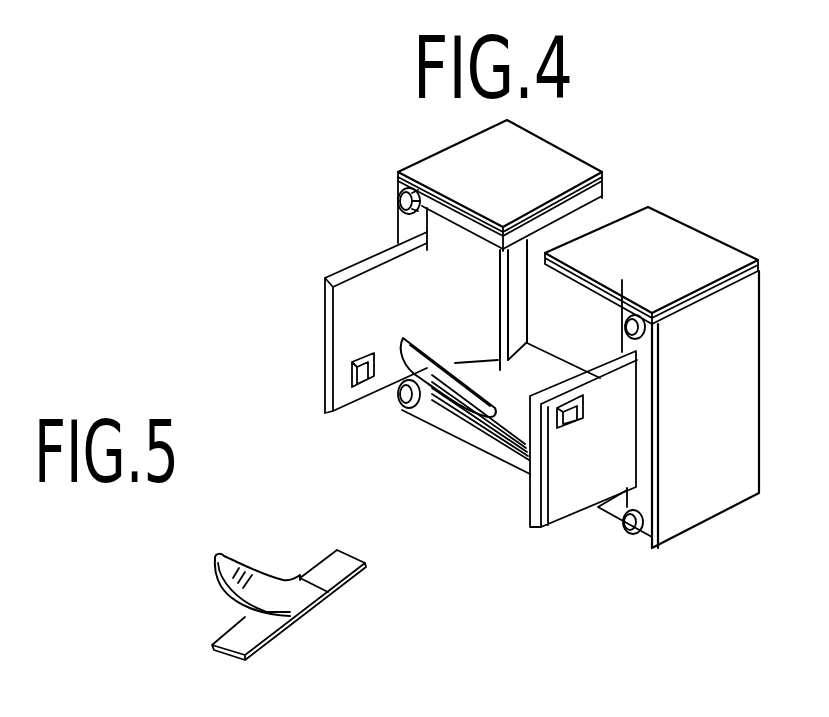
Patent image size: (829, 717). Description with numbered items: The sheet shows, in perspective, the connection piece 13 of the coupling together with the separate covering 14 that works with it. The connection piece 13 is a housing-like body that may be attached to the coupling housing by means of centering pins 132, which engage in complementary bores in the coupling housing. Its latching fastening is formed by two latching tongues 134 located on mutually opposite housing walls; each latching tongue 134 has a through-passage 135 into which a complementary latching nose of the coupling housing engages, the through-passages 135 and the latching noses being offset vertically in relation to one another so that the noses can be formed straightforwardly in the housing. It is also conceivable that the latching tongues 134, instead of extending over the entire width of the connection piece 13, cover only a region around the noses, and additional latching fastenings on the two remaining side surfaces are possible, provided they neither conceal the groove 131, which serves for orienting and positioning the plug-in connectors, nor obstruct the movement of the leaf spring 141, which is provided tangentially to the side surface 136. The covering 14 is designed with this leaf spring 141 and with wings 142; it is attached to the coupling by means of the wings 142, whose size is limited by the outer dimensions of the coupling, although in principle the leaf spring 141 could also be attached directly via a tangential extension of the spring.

In FIG. 4, the connection piece 13 is at (663, 103).
In FIG. 4, the groove 131 is at (600, 197).
In FIG. 4, the centering pins 132 is at (399, 196).
In FIG. 4, the latching tongues 134 is at (370, 297).
In FIG. 4, the through-passages 135 is at (353, 377).
In FIG. 4, the side surface 136 is at (535, 330).
In FIG. 5, the covering 14 is at (265, 546).
In FIG. 4, the leaf spring 141 is at (445, 373).
In FIG. 5, the leaf spring 141 is at (232, 569).
In FIG. 5, the wings 142 is at (245, 633).